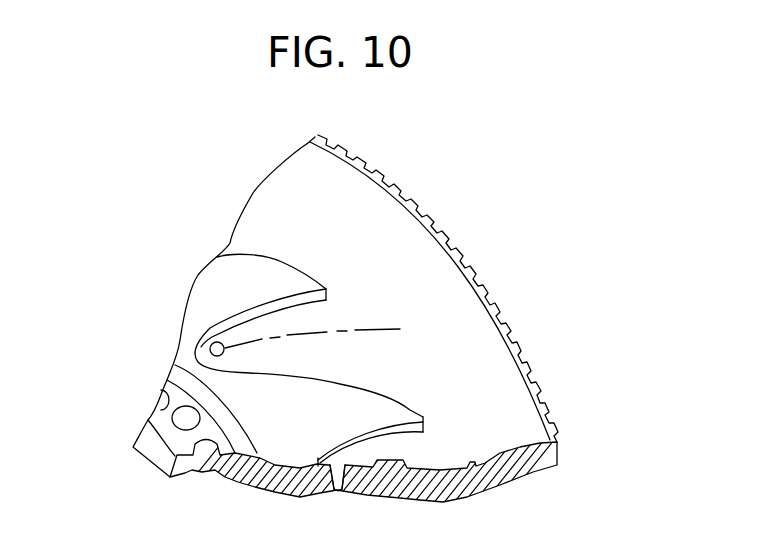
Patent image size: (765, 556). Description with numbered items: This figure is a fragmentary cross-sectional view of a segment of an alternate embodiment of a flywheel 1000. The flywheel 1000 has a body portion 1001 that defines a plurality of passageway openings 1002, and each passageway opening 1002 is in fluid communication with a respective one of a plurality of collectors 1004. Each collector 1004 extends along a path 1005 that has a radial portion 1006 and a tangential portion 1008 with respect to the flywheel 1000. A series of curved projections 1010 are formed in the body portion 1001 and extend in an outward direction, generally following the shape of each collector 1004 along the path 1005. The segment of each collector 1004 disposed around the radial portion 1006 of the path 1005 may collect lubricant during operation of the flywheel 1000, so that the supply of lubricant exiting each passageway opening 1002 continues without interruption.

The flywheel 1000 is at (563, 322).
The body portion 1001 is at (295, 198).
The passageway opening 1002 is at (217, 349).
The collector 1004 is at (340, 353).
The path 1005 is at (293, 330).
The radial portion 1006 is at (258, 337).
The tangential portion 1008 is at (327, 330).
The curved projection 1010 is at (257, 275).